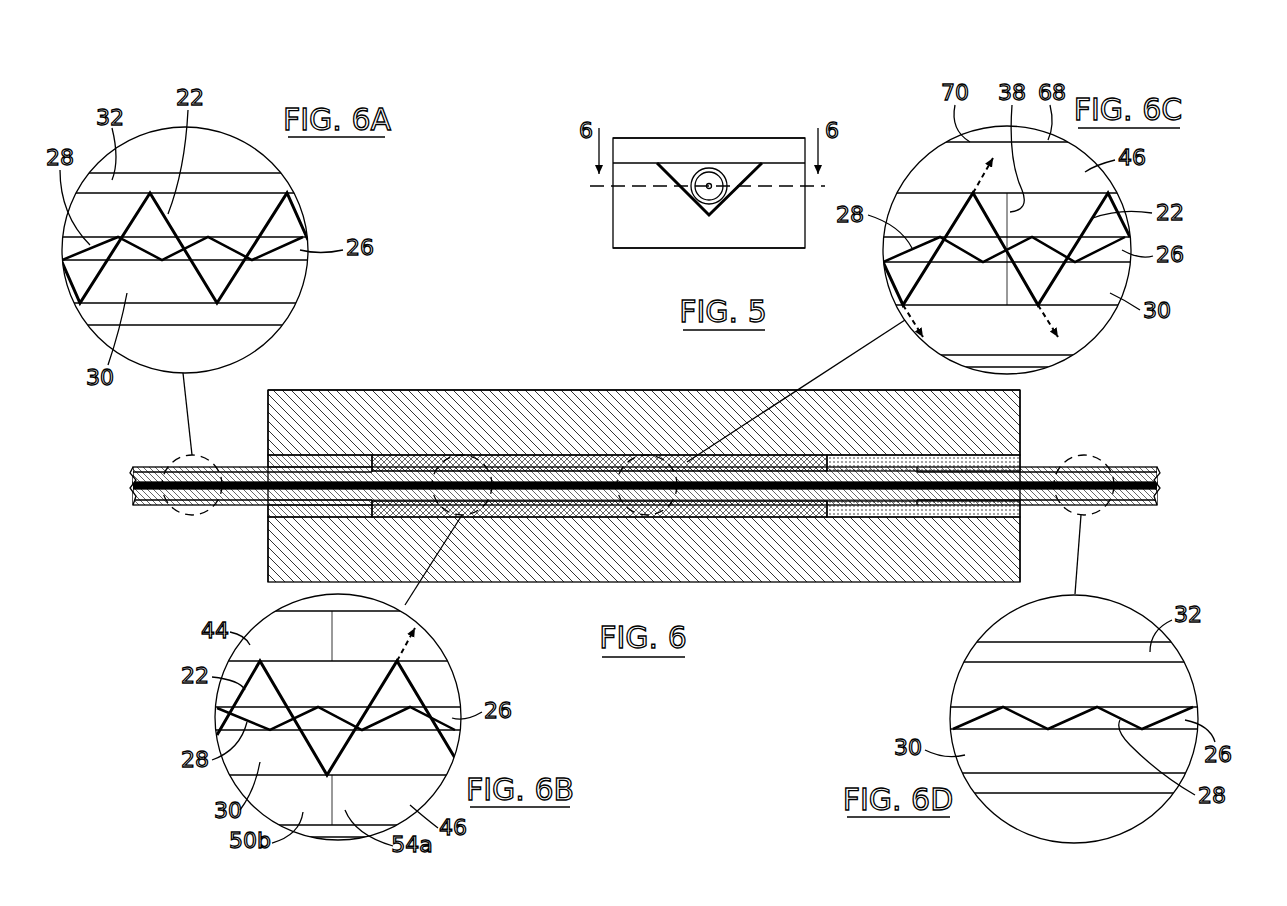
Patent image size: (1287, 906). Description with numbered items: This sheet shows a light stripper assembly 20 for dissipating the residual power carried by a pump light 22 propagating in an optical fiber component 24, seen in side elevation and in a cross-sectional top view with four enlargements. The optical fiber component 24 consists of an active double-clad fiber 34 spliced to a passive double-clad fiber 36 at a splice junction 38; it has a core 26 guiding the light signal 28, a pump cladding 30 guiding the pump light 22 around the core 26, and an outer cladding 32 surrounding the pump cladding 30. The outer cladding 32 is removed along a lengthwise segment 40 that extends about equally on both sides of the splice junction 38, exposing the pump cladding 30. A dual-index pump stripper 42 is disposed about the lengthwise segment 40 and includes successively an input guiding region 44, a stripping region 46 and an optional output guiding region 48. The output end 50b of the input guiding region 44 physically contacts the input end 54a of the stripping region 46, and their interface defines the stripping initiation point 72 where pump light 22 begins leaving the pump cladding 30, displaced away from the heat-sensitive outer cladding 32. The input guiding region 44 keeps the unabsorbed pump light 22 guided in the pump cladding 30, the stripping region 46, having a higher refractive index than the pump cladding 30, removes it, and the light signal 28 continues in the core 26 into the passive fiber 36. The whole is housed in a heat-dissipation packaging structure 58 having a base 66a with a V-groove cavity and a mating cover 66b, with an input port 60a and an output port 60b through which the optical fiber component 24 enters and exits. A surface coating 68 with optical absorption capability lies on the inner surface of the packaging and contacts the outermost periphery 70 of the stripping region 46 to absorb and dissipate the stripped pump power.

In FIG. 5, the light stripper assembly 20 is at (797, 84).
In FIG. 6, the light stripper assembly 20 is at (1174, 361).
In FIG. 6A, the pump light 22 is at (168, 214).
In FIG. 6C, the pump light 22 is at (1093, 218).
In FIG. 6B, the pump light 22 is at (245, 690).
In FIG. 6, the optical fiber component 24 is at (1138, 440).
In FIG. 5, the core 26 is at (708, 183).
In FIG. 6, the core 26 is at (1160, 486).
In FIG. 6A, the core 26 is at (300, 250).
In FIG. 6C, the core 26 is at (1122, 250).
In FIG. 6B, the core 26 is at (452, 718).
In FIG. 6D, the core 26 is at (1185, 720).
In FIG. 6A, the light signal 28 is at (90, 245).
In FIG. 6C, the light signal 28 is at (912, 248).
In FIG. 6B, the light signal 28 is at (247, 722).
In FIG. 6D, the light signal 28 is at (1120, 720).
In FIG. 5, the pump cladding 30 is at (705, 200).
In FIG. 6, the pump cladding 30 is at (790, 512).
In FIG. 6A, the pump cladding 30 is at (127, 293).
In FIG. 6C, the pump cladding 30 is at (1110, 293).
In FIG. 6B, the pump cladding 30 is at (260, 762).
In FIG. 6D, the pump cladding 30 is at (965, 755).
In FIG. 5, the outer cladding 32 is at (722, 176).
In FIG. 6, the outer cladding 32 is at (152, 506).
In FIG. 6A, the outer cladding 32 is at (112, 180).
In FIG. 6D, the outer cladding 32 is at (1150, 652).
In FIG. 6, the active double-clad fiber 34 is at (216, 524).
In FIG. 6, the passive double-clad fiber 36 is at (1136, 524).
In FIG. 6, the splice junction 38 is at (630, 462).
In FIG. 6C, the splice junction 38 is at (1010, 212).
In FIG. 6, the lengthwise segment 40 is at (595, 494).
In FIG. 6, the pump stripper 42 is at (695, 524).
In FIG. 6, the input guiding region 44 is at (410, 462).
In FIG. 6B, the input guiding region 44 is at (250, 645).
In FIG. 6, the stripping region 46 is at (818, 462).
In FIG. 6C, the stripping region 46 is at (1085, 172).
In FIG. 6B, the stripping region 46 is at (410, 805).
In FIG. 6, the output guiding region 48 is at (876, 512).
In FIG. 6B, the output end of input guiding region 50b is at (303, 812).
In FIG. 6B, the input end of stripping region 54a is at (345, 810).
In FIG. 5, the heat-dissipation packaging structure 58 is at (596, 208).
In FIG. 6, the heat-dissipation packaging structure 58 is at (455, 377).
In FIG. 6, the input port 60a is at (249, 433).
In FIG. 6, the output port 60b is at (1043, 433).
In FIG. 5, the base 66a is at (630, 240).
In FIG. 6, the base 66a is at (337, 400).
In FIG. 5, the mating cover 66b is at (628, 150).
In FIG. 5, the surface coating 68 is at (728, 197).
In FIG. 6, the surface coating 68 is at (538, 462).
In FIG. 6C, the surface coating 68 is at (1048, 140).
In FIG. 6, the outermost periphery of stripping region 70 is at (505, 512).
In FIG. 6C, the outermost periphery of stripping region 70 is at (970, 142).
In FIG. 6, the stripping initiation point 72 is at (457, 520).